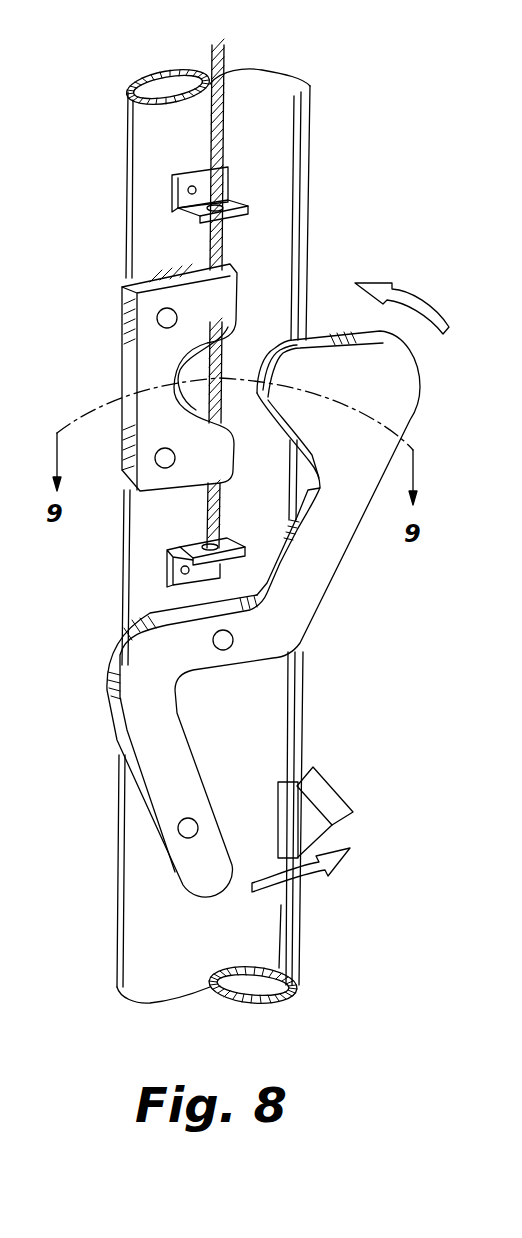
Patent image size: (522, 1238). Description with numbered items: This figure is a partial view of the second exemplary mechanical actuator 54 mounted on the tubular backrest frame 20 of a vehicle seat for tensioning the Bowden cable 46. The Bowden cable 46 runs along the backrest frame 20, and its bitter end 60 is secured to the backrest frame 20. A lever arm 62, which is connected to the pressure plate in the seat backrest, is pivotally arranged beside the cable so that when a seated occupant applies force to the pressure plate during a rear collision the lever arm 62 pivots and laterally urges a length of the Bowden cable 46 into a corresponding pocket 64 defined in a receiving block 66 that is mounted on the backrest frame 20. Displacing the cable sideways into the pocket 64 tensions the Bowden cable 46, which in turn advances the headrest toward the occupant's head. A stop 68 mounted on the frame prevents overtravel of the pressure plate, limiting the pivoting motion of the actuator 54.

The backrest frame 20 is at (310, 143).
The Bowden cable 46 is at (211, 152).
The second exemplary mechanical actuator 54 is at (346, 254).
The bitter end 60 is at (178, 543).
The lever arm 62 is at (330, 583).
The pocket 64 is at (186, 378).
The receiving block 66 is at (122, 328).
The stop 68 is at (333, 770).